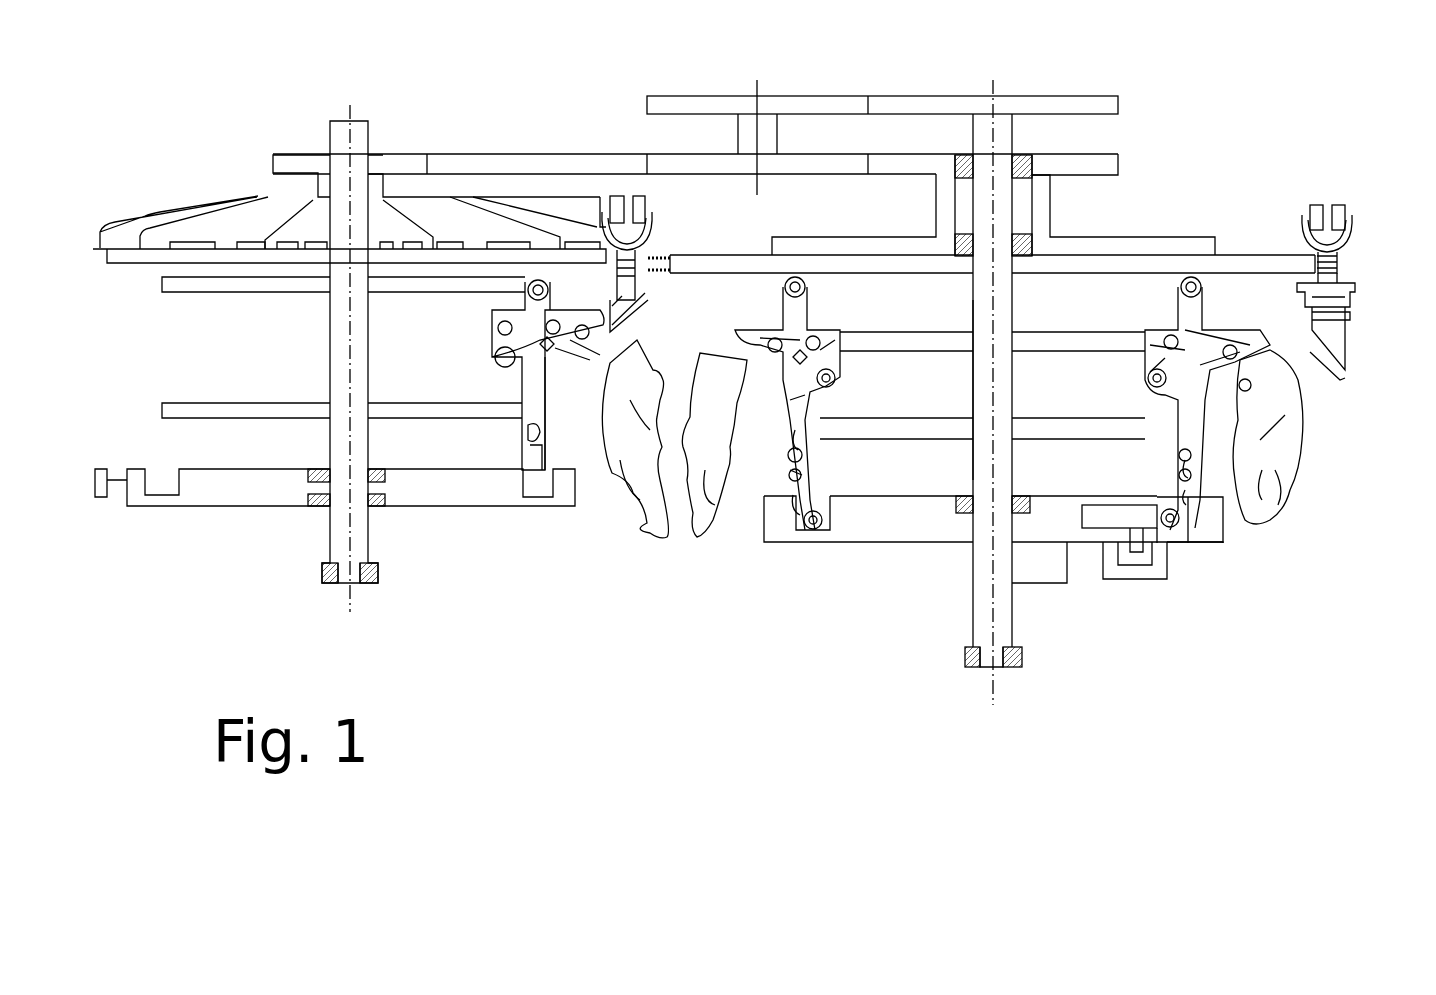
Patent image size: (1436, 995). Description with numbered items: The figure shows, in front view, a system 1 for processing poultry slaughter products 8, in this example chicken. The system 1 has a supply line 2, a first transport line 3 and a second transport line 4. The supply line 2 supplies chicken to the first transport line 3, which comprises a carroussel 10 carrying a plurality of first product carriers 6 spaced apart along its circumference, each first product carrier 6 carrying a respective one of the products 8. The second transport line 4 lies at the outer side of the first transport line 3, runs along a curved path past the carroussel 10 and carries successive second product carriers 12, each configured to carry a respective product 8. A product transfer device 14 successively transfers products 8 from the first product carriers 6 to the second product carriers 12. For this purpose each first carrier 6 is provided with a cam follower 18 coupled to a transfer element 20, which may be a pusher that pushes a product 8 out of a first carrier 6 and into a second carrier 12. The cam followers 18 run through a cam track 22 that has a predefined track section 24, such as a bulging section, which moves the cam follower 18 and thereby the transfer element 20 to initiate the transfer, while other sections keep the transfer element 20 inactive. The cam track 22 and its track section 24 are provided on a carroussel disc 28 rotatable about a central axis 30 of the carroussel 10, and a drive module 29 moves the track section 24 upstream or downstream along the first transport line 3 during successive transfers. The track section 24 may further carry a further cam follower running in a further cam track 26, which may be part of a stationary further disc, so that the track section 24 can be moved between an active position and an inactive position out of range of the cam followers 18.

The system 1 is at (645, 712).
The supply line 2 is at (615, 138).
The first transport line 3 is at (765, 555).
The second transport line 4 is at (1333, 188).
The first product carrier 6 is at (850, 386).
The poultry slaughter product 8 is at (698, 520).
The carroussel 10 is at (960, 612).
The second product carrier 12 is at (1357, 352).
The product transfer device 14 is at (1238, 563).
The cam follower 18 is at (1192, 510).
The transfer element 20 is at (1212, 402).
The cam track 22 is at (799, 532).
The predefined track section 24 is at (1110, 510).
The further cam track 26 is at (1125, 562).
The carroussel disc 28 is at (890, 530).
The drive module 29 is at (1037, 565).
The central axis 30 is at (1000, 392).